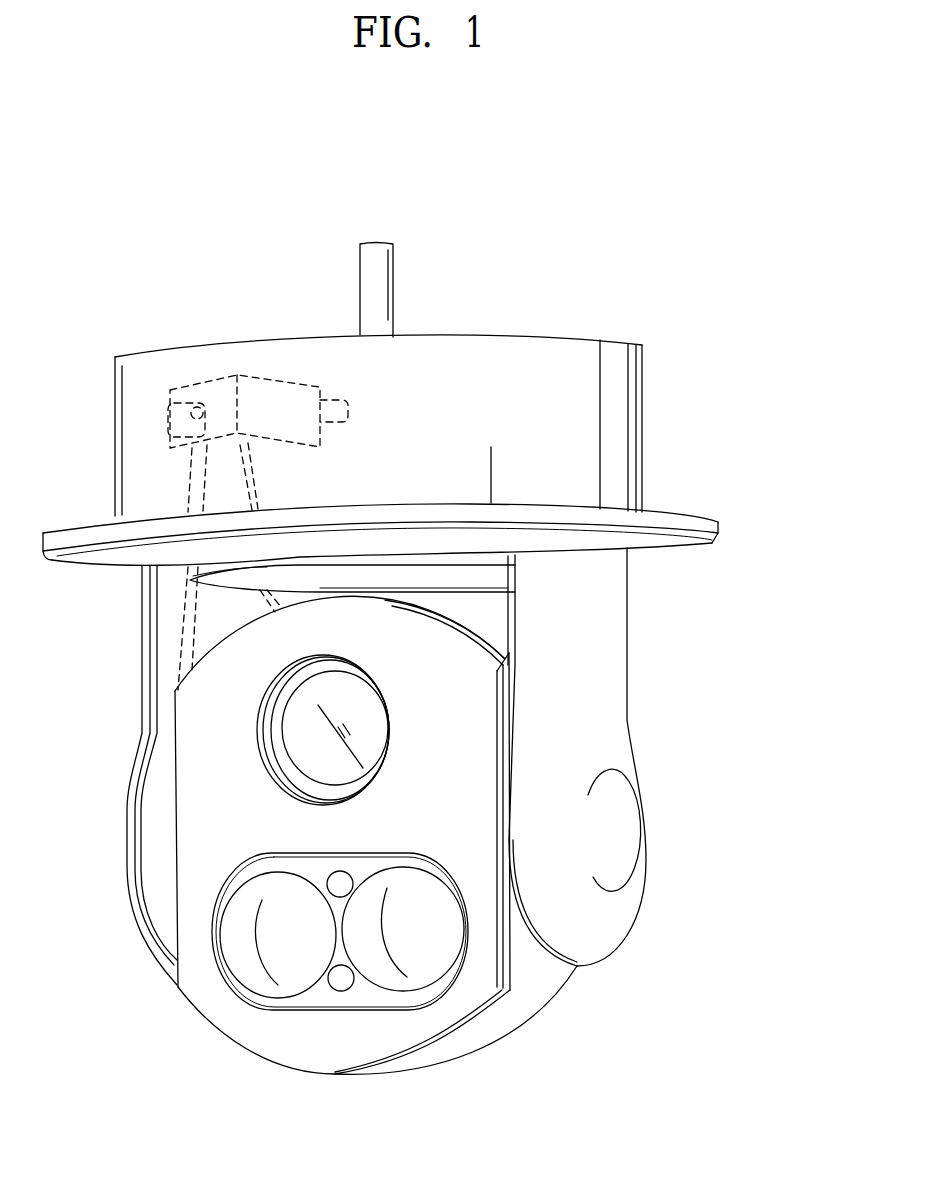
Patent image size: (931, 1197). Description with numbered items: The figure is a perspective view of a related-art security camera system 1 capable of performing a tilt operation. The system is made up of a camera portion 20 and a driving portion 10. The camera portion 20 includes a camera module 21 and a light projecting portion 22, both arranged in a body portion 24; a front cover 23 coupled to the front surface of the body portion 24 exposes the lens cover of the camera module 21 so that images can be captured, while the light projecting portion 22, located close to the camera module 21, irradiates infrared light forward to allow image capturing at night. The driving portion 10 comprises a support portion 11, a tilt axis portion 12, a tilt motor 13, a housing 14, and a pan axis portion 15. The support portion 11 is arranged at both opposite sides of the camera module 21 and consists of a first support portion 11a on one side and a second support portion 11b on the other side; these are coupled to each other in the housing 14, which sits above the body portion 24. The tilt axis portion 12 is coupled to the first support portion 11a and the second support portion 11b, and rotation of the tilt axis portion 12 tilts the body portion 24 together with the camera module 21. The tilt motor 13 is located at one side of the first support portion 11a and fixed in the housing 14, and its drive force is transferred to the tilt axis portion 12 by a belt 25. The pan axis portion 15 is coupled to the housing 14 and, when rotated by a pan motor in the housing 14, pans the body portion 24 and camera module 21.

The security camera system 1 is at (662, 185).
The driving portion 10 is at (437, 622).
The support portion 11 is at (449, 766).
The first support portion 11a is at (170, 617).
The second support portion 11b is at (607, 663).
The tilt axis portion 12 is at (625, 818).
The tilt motor 13 is at (292, 383).
The housing 14 is at (620, 477).
The pan axis portion 15 is at (387, 288).
The camera portion 20 is at (322, 867).
The camera module 21 is at (310, 735).
The light projecting portion 22 is at (263, 978).
The front cover 23 is at (330, 1052).
The body portion 24 is at (507, 1030).
The belt 25 is at (190, 478).